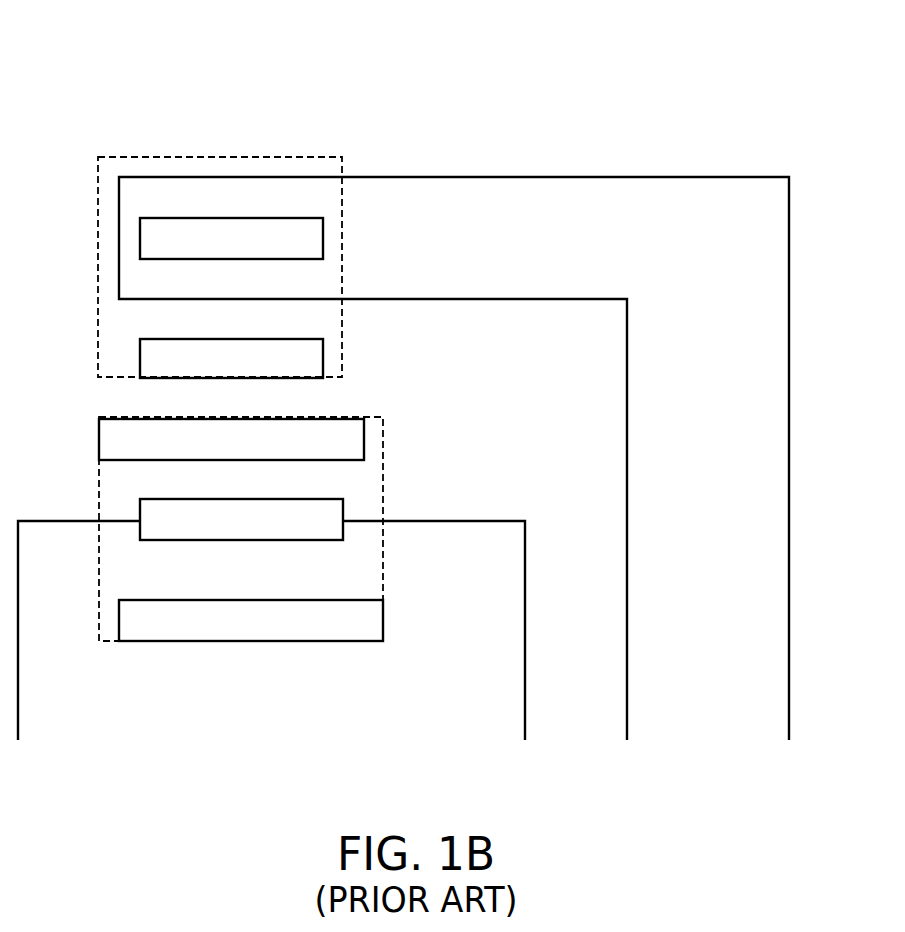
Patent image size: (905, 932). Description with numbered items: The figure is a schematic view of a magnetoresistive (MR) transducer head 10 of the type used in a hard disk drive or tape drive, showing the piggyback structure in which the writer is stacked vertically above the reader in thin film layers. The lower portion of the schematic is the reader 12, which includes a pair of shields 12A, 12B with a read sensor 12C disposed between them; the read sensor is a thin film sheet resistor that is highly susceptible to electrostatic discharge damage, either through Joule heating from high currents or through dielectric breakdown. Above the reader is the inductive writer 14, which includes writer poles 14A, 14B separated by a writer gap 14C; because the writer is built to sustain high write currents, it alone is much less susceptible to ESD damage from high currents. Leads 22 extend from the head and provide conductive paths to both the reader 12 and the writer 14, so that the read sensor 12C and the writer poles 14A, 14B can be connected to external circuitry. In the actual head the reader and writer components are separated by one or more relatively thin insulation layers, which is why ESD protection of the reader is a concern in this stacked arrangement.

The MR transducer head 10 is at (112, 40).
The reader 12 is at (384, 578).
The shield 12A is at (205, 452).
The shield 12B is at (225, 634).
The read sensor 12C is at (215, 533).
The writer 14 is at (320, 157).
The writer pole 14A is at (205, 252).
The writer pole 14B is at (205, 373).
The writer gap 14C is at (124, 317).
The leads 22 is at (19, 731).